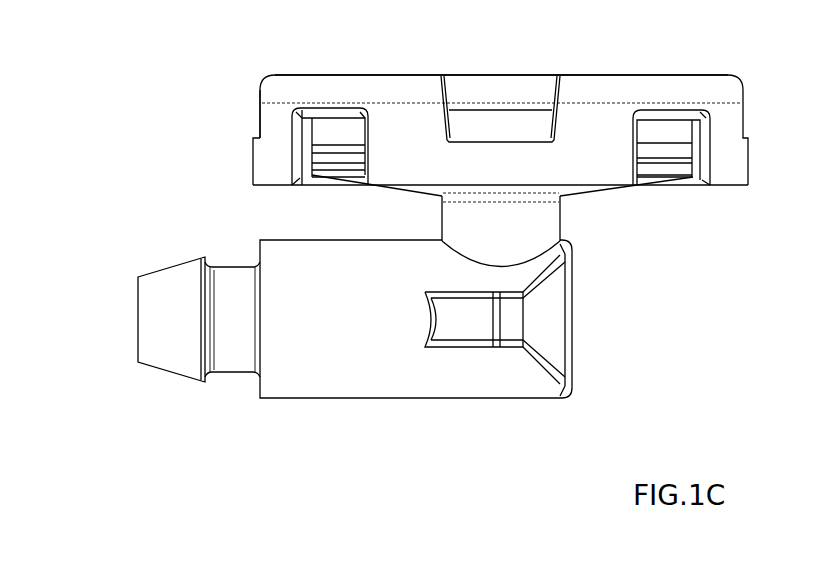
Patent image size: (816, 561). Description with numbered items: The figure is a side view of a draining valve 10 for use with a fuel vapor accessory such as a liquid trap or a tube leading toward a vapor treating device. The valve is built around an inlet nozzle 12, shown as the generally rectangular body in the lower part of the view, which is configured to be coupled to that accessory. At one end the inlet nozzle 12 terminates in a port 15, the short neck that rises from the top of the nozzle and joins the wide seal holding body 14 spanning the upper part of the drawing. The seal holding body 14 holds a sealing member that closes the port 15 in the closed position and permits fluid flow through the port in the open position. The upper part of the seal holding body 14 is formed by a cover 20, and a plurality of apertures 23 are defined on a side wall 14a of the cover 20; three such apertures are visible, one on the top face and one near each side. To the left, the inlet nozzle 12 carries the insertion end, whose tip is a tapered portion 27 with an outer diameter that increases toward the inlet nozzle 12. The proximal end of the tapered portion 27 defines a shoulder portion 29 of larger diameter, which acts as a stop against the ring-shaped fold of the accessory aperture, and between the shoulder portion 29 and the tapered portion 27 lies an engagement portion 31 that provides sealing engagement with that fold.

The draining valve 10 is at (192, 158).
The inlet nozzle 12 is at (412, 385).
The seal holding body 14 is at (605, 123).
The side wall 14a is at (274, 120).
The port 15 is at (525, 220).
The cover 20 is at (400, 88).
The apertures 23 is at (487, 100).
The tapered portion 27 is at (178, 355).
The shoulder portion 29 is at (207, 373).
The engagement portion 31 is at (226, 360).